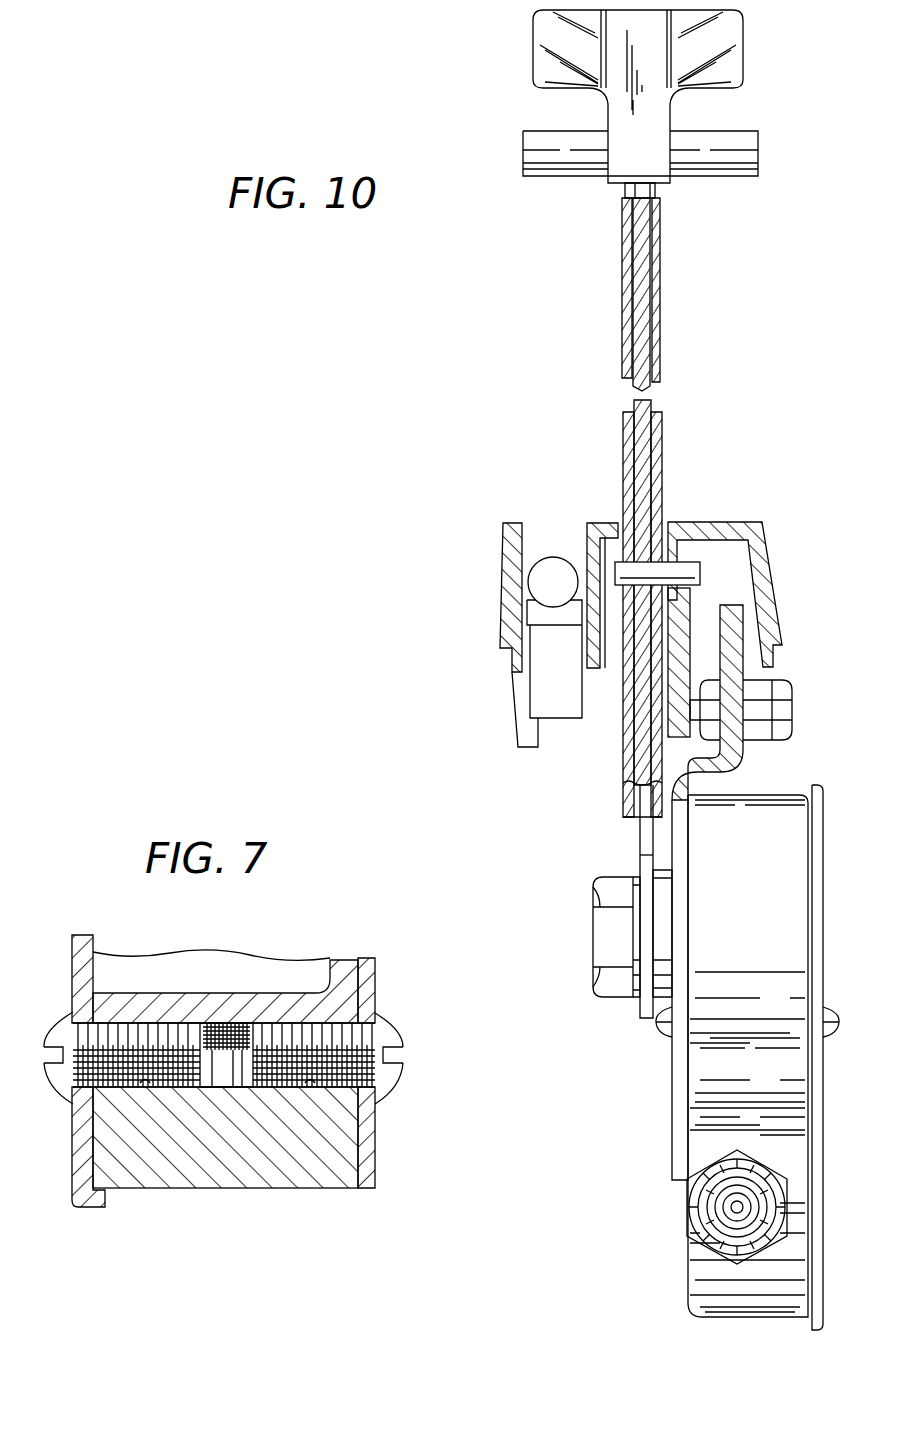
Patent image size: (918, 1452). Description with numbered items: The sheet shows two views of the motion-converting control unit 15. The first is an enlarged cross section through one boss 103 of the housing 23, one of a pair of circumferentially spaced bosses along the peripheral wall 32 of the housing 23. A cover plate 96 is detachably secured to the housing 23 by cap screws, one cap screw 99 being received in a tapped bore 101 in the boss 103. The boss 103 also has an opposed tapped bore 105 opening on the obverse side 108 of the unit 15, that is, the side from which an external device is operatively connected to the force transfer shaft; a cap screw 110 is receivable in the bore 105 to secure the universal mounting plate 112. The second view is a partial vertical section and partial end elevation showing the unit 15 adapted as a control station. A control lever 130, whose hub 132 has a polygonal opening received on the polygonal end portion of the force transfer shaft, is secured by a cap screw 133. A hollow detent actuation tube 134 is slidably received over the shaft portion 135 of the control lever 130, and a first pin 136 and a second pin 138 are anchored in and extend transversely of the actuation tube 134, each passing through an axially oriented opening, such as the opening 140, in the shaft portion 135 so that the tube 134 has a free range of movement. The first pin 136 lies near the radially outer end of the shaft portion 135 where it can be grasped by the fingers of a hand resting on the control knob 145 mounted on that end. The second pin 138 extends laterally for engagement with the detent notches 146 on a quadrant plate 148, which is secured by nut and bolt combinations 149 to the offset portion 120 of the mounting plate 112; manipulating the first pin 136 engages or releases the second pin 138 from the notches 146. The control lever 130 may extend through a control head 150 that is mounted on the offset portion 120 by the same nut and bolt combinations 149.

In FIG. 10, the control knob 145 is at (735, 58).
In FIG. 10, the first pin 136 is at (758, 147).
In FIG. 10, the shaft portion 135 is at (642, 240).
In FIG. 10, the detent actuation tube 134 is at (663, 330).
In FIG. 10, the control lever 130 is at (716, 282).
In FIG. 10, the control head 150 is at (692, 516).
In FIG. 10, the second pin 138 is at (711, 551).
In FIG. 10, the opening 140 is at (648, 603).
In FIG. 10, the detent notches 146 is at (680, 625).
In FIG. 10, the quadrant plate 148 is at (675, 670).
In FIG. 10, the offset portion 120 is at (738, 665).
In FIG. 10, the nut and bolt combinations 149 is at (780, 690).
In FIG. 10, the universal mounting plate 112 is at (748, 760).
In FIG. 7, the universal mounting plate 112 is at (372, 982).
In FIG. 10, the cover plate 96 is at (815, 873).
In FIG. 7, the cover plate 96 is at (75, 1145).
In FIG. 10, the cap screw 133 is at (608, 935).
In FIG. 10, the hub 132 is at (645, 1005).
In FIG. 10, the cap screw 110 is at (662, 1040).
In FIG. 7, the cap screw 110 is at (392, 1030).
In FIG. 10, the control unit 15 is at (664, 1124).
In FIG. 7, the peripheral wall 32 is at (290, 963).
In FIG. 7, the boss 103 is at (228, 1000).
In FIG. 7, the cap screw 99 is at (52, 1033).
In FIG. 7, the tapped bore 101 is at (140, 1083).
In FIG. 7, the tapped bore 105 is at (310, 1080).
In FIG. 7, the obverse side 108 is at (370, 1148).
In FIG. 7, the housing 23 is at (259, 1196).